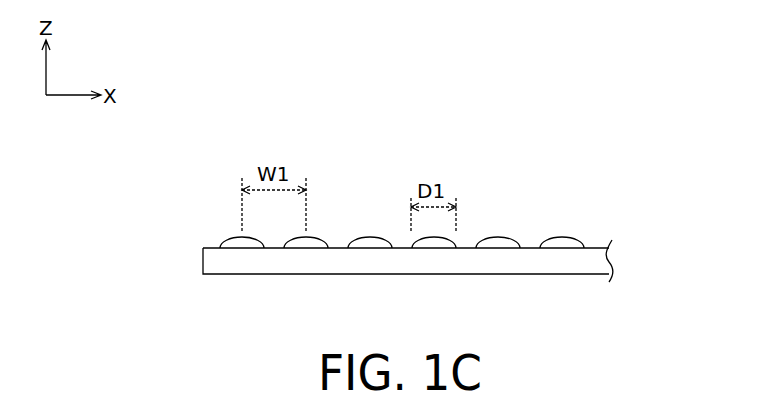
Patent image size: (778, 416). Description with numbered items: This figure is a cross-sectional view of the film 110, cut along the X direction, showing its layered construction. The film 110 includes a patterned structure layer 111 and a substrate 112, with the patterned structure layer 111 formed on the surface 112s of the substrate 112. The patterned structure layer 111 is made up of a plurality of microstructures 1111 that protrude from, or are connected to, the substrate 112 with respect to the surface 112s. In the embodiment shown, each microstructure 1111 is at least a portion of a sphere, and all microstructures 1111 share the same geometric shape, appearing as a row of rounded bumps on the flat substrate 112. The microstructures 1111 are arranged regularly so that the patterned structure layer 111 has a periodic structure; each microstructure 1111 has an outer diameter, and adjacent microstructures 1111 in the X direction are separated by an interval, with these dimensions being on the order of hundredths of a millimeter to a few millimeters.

The film 110 is at (110, 230).
The patterned structure layer 111 is at (222, 237).
The microstructure 1111 is at (318, 240).
The substrate 112 is at (212, 262).
The surface 112s is at (598, 248).